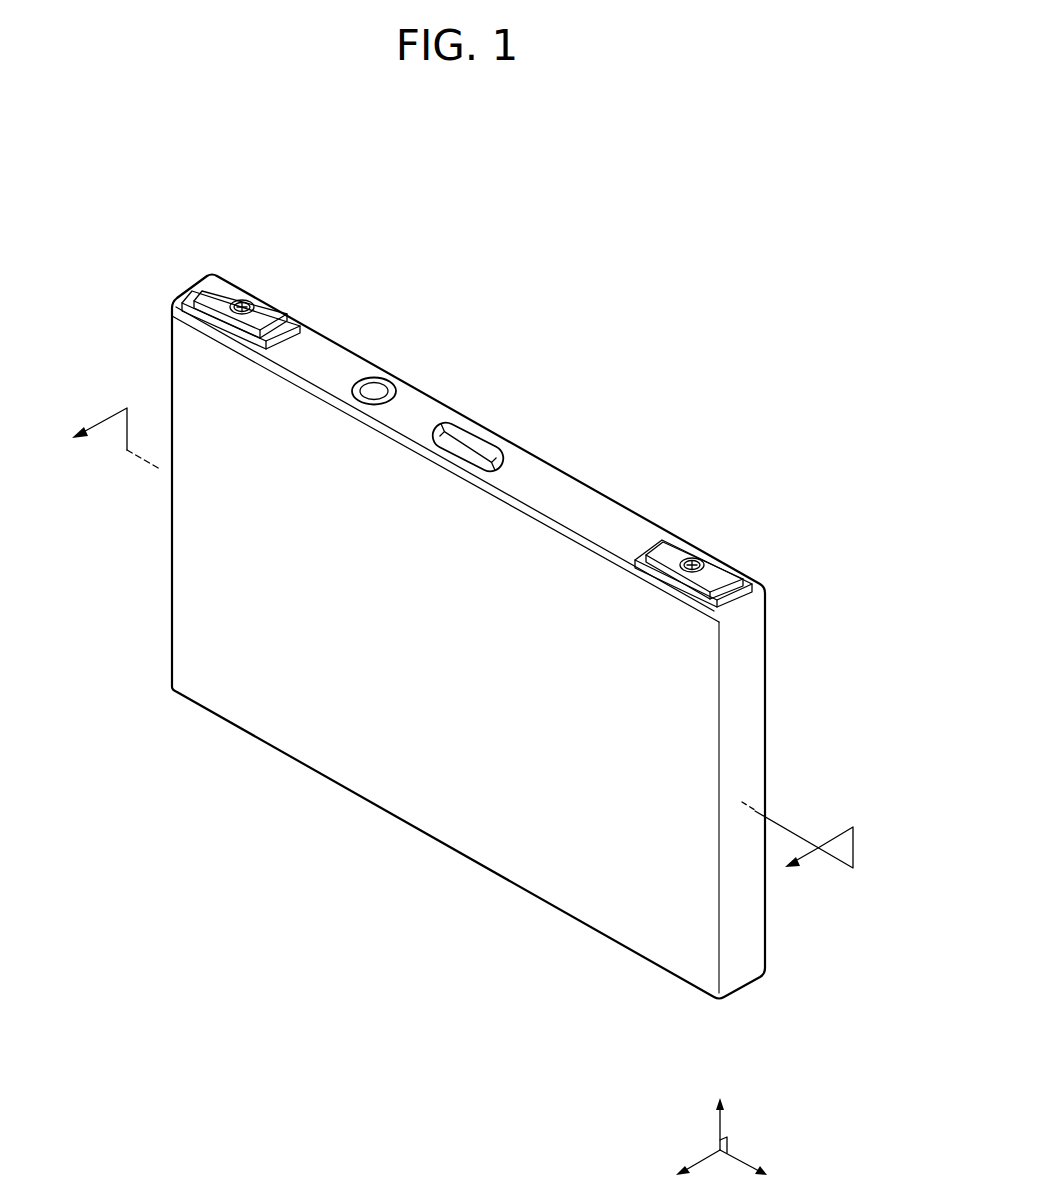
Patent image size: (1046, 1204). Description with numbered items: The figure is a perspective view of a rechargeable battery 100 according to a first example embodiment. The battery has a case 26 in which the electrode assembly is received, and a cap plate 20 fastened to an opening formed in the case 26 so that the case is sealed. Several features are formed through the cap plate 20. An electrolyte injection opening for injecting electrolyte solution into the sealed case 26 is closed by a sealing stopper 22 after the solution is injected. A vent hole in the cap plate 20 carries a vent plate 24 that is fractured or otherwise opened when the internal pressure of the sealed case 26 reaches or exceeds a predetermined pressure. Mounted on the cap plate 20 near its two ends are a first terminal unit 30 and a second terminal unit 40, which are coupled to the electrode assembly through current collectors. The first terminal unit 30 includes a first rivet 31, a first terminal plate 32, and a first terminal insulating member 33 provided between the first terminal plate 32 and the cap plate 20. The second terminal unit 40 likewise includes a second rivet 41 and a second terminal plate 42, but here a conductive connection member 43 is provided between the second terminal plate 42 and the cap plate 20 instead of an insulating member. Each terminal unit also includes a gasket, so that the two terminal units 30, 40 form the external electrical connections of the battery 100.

The rechargeable battery 100 is at (479, 185).
The cap plate 20 is at (560, 468).
The sealing stopper 22 is at (377, 389).
The vent plate 24 is at (476, 442).
The case 26 is at (423, 803).
The first terminal unit 30 is at (348, 272).
The first rivet 31 is at (241, 300).
The first terminal plate 32 is at (268, 312).
The first terminal insulating member 33 is at (299, 319).
The second terminal unit 40 is at (799, 532).
The second rivet 41 is at (692, 558).
The second terminal plate 42 is at (717, 573).
The conductive connection member 43 is at (749, 583).